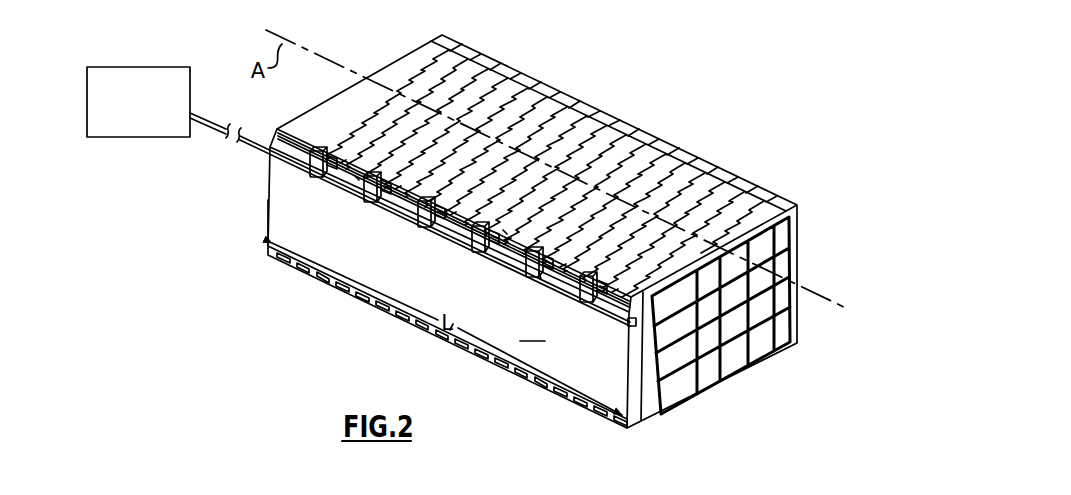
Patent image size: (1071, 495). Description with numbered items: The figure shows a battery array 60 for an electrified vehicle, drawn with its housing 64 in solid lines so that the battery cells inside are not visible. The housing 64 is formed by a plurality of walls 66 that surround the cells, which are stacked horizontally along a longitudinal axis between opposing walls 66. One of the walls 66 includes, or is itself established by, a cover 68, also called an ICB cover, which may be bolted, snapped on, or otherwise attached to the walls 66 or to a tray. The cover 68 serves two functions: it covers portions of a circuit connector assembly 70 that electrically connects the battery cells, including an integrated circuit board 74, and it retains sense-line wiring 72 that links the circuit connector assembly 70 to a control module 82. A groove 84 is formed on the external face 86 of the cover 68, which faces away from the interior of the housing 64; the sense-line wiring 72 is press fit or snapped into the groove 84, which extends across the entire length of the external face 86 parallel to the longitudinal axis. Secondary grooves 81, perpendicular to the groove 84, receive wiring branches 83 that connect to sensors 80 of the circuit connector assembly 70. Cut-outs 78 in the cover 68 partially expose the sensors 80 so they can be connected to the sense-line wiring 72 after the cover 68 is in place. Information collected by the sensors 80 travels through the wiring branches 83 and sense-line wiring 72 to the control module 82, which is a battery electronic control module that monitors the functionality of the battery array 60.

The battery array 60 is at (612, 58).
The housing 64 is at (722, 150).
The walls 66 is at (352, 87).
The cover 68 is at (458, 300).
The circuit connector assembly 70 is at (540, 279).
The sense-line wiring 72 is at (357, 178).
The integrated circuit board 74 is at (507, 231).
The cut-outs 78 is at (315, 170).
The sensors 80 is at (340, 178).
The secondary grooves 81 is at (330, 180).
The control module 82 is at (140, 67).
The wiring branches 83 is at (373, 175).
The groove 84 is at (632, 326).
The external face 86 is at (532, 331).